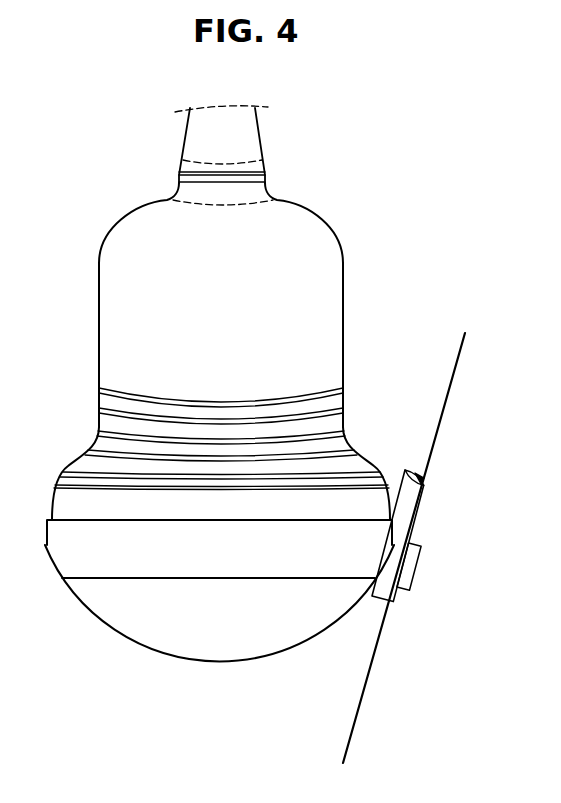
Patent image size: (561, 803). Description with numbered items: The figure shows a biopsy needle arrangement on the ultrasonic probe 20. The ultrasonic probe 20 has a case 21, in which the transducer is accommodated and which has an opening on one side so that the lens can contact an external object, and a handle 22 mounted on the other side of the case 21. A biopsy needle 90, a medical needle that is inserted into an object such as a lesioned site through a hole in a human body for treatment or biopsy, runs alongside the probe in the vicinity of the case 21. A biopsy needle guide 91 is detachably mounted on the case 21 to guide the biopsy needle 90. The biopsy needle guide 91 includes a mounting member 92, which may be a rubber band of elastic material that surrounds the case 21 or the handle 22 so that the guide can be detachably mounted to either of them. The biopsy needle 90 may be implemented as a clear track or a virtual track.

The ultrasonic probe 20 is at (218, 386).
The handle 22 is at (115, 323).
The case 21 is at (90, 612).
The mounting member 92 is at (146, 570).
The biopsy needle guide 91 is at (410, 517).
The biopsy needle 90 is at (372, 663).